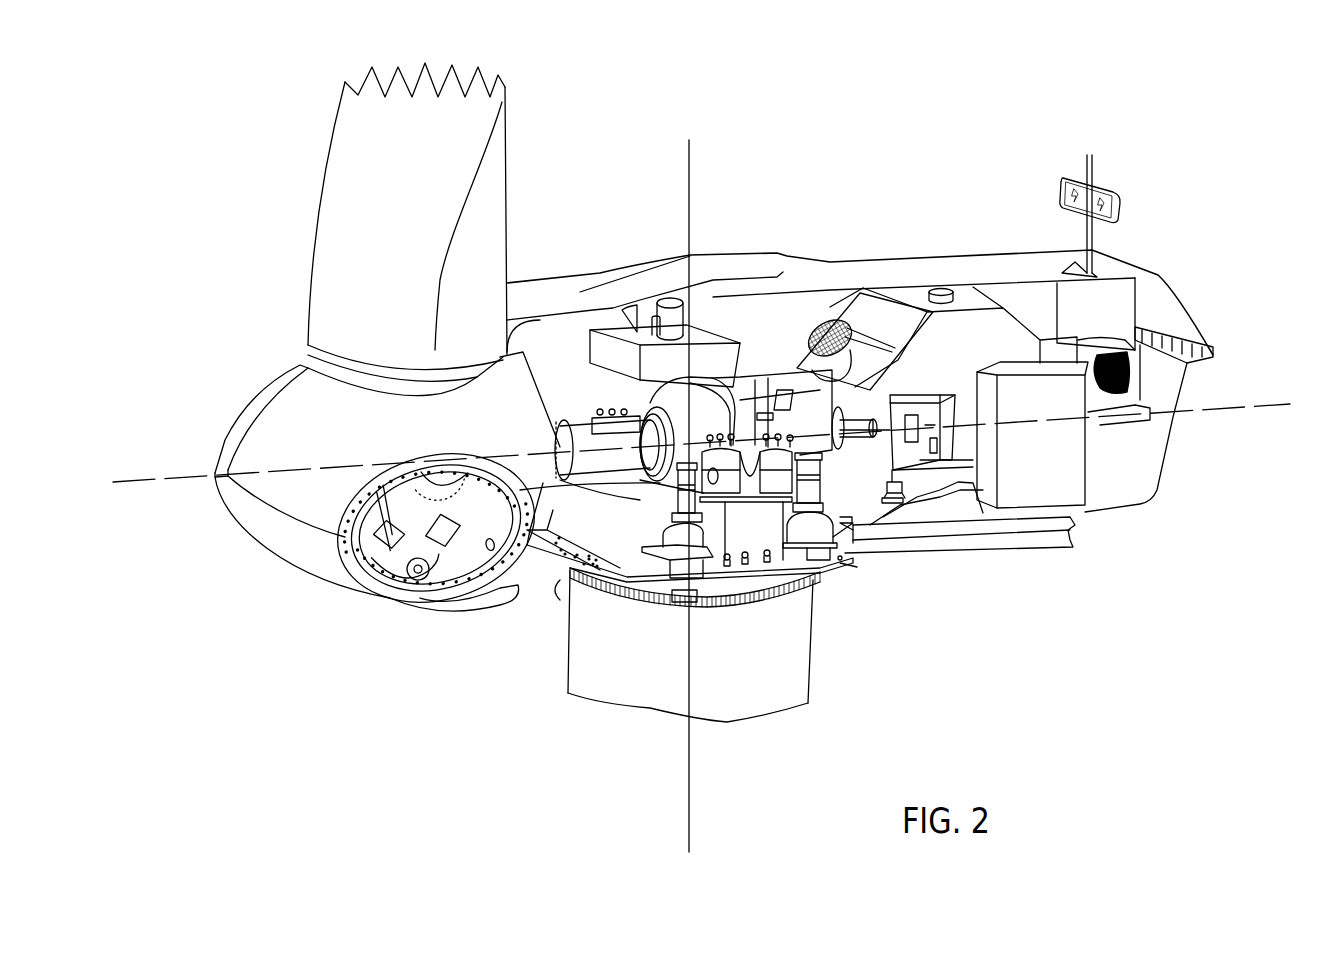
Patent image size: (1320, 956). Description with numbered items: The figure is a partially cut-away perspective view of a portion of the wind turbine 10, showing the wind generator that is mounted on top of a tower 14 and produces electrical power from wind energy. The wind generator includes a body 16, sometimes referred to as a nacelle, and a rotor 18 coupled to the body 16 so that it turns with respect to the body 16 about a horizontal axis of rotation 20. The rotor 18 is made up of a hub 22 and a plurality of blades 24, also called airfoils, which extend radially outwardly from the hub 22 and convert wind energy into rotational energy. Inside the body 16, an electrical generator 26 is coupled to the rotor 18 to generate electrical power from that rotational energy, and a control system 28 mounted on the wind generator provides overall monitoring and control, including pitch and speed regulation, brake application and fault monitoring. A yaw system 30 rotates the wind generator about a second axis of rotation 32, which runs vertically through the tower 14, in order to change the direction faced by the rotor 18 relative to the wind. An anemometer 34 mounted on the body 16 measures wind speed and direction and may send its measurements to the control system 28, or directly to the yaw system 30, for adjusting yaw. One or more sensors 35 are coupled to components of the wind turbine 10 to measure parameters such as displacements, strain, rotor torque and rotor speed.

The wind turbine 10 is at (1282, 204).
The tower 14 is at (758, 690).
The body 16 is at (541, 298).
The rotor 18 is at (230, 372).
The axis of rotation 20 is at (146, 486).
The hub 22 is at (303, 497).
The blades 24 is at (352, 216).
The electrical generator 26 is at (911, 452).
The control system 28 is at (1016, 410).
The yaw system 30 is at (658, 598).
The axis of rotation 32 is at (688, 172).
The anemometer 34 is at (1120, 195).
The sensors 35 is at (790, 385).